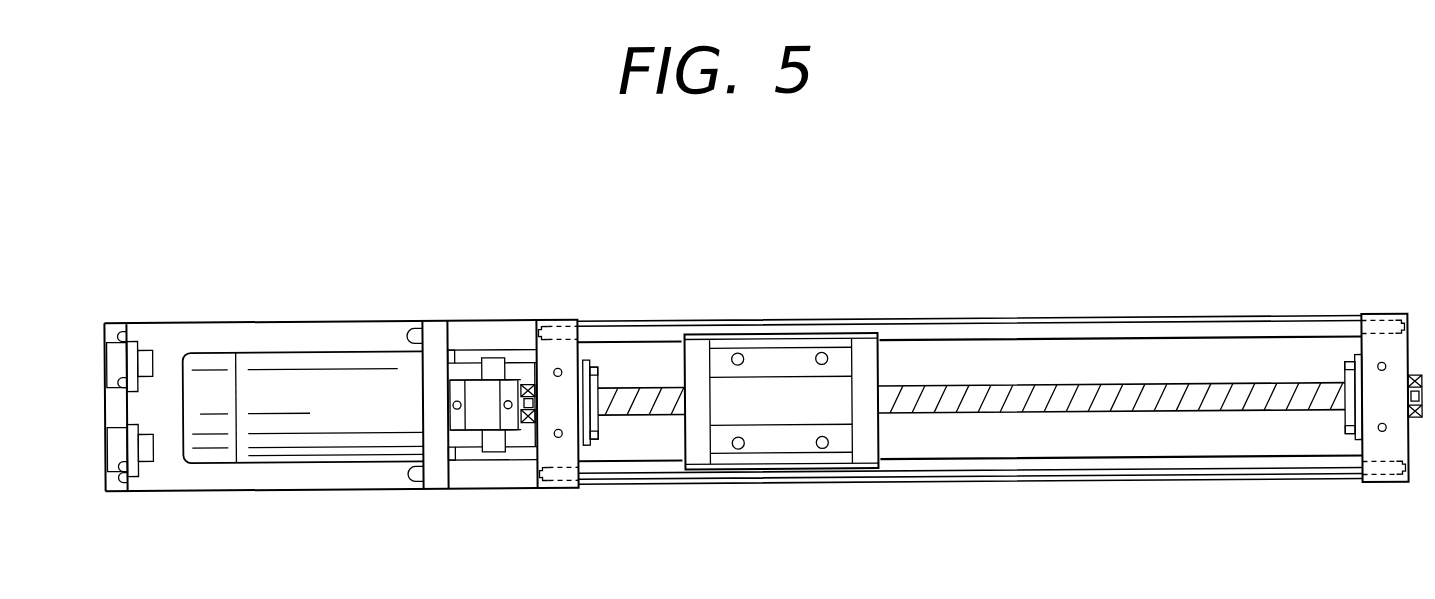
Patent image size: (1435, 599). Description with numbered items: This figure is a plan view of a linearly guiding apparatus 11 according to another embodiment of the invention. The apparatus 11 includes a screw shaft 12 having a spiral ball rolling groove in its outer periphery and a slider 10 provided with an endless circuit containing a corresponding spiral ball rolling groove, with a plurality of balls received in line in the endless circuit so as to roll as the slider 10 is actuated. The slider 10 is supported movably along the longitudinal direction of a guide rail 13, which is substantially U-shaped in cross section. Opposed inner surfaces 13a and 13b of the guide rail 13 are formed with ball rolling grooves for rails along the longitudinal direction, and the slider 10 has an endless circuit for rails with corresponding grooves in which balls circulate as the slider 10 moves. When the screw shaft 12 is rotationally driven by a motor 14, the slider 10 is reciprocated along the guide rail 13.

The slider 10 is at (775, 413).
The linearly guiding apparatus 11 is at (763, 381).
The screw shaft 12 is at (964, 388).
The guide rail 13 is at (970, 401).
The inner surface 13a is at (1060, 352).
The inner surface 13b is at (1063, 447).
The motor 14 is at (338, 375).